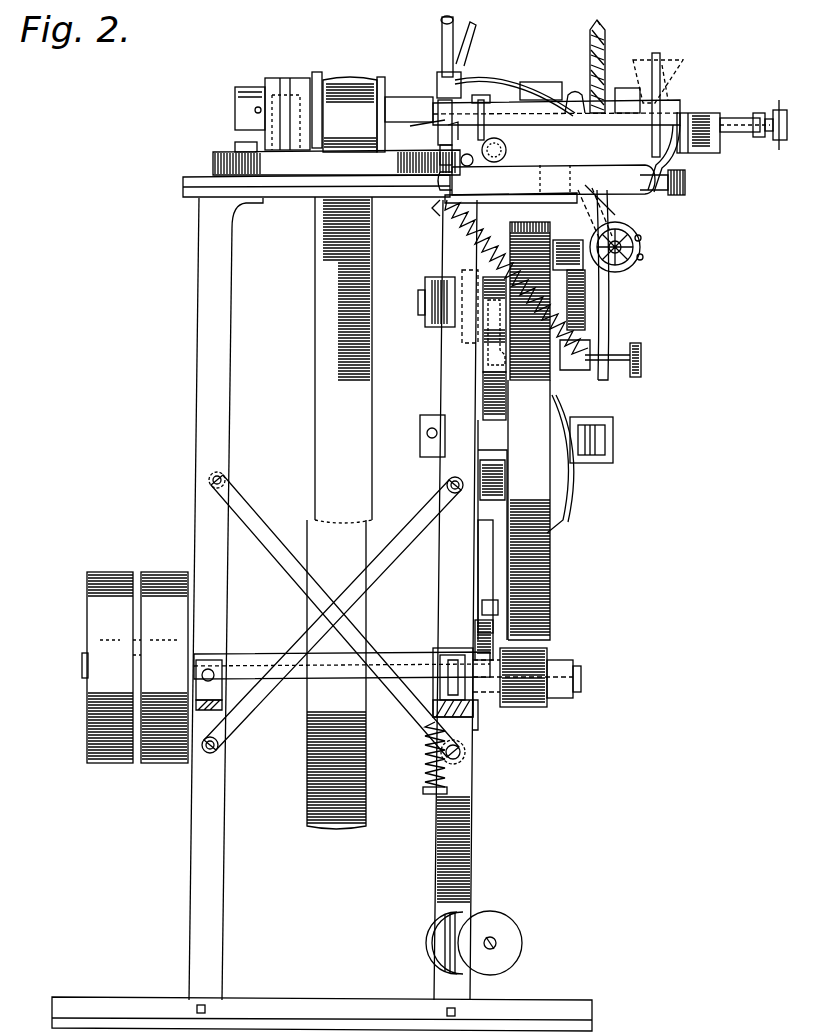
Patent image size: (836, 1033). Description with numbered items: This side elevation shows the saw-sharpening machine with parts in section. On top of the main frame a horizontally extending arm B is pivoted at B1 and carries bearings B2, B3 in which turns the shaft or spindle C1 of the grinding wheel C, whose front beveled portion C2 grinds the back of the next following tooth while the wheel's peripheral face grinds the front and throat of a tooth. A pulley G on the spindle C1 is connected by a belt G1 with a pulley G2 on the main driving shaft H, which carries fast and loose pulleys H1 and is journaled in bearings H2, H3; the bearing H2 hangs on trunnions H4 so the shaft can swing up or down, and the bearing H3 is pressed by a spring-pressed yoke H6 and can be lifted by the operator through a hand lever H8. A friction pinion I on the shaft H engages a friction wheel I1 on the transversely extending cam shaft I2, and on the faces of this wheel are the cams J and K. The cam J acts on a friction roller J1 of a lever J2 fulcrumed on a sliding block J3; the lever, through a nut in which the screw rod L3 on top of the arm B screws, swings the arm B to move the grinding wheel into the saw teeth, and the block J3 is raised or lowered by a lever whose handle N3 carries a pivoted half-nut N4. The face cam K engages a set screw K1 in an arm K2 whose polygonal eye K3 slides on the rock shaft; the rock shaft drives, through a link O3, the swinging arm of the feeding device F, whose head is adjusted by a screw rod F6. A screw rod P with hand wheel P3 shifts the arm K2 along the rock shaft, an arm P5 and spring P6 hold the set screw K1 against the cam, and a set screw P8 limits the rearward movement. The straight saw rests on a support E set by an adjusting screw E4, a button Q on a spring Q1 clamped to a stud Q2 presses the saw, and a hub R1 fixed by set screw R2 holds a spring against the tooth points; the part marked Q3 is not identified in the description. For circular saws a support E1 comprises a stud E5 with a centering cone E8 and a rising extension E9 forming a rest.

The main driving shaft H is at (198, 396).
The horizontally-extending arm B is at (336, 157).
The pivot B1 is at (235, 147).
The bearing B2 is at (297, 80).
The bearing B3 is at (541, 78).
The pulley G is at (380, 77).
The belt G1 is at (327, 377).
The pulley G2 is at (306, 792).
The grinding wheel C is at (591, 33).
The shaft or spindle C1 is at (408, 100).
The front beveled portion C2 is at (603, 35).
The button Q is at (627, 88).
The spring Q1 is at (505, 78).
The stud Q2 is at (440, 108).
The stop Q3 is at (442, 150).
The hub R1 is at (450, 120).
The set screw R2 is at (420, 126).
The handle N3 is at (442, 40).
The pivoted half-nut N4 is at (474, 40).
The saw support E is at (583, 90).
The saw support E1 is at (682, 82).
The adjusting screw E4 is at (483, 108).
The stud E5 is at (659, 55).
The cone E8 is at (678, 64).
The rising extension E9 is at (672, 153).
The feeding device F is at (745, 114).
The screw rod F6 is at (770, 136).
The link O3 is at (727, 152).
The screw rod L3 is at (483, 149).
The screw rod P is at (638, 242).
The hand wheel P3 is at (641, 259).
The arm P5 is at (604, 305).
The spring P6 is at (540, 322).
The set screw P8 is at (675, 195).
The fast and loose pulleys H1 is at (468, 250).
The bearing H2 is at (218, 690).
The bearing H3 is at (445, 672).
The trunnions H4 is at (618, 194).
The spring-pressed yoke H6 is at (500, 182).
The hand lever H8 is at (478, 580).
The cam J is at (483, 382).
The friction roller J1 is at (483, 366).
The lever J2 is at (492, 350).
The block J3 is at (450, 277).
The cam K is at (566, 500).
The set screw K1 is at (632, 352).
The arm K2 is at (568, 298).
The polygonal eye K3 is at (568, 253).
The friction pinion I is at (527, 706).
The friction wheel I1 is at (553, 596).
The cam shaft I2 is at (613, 438).